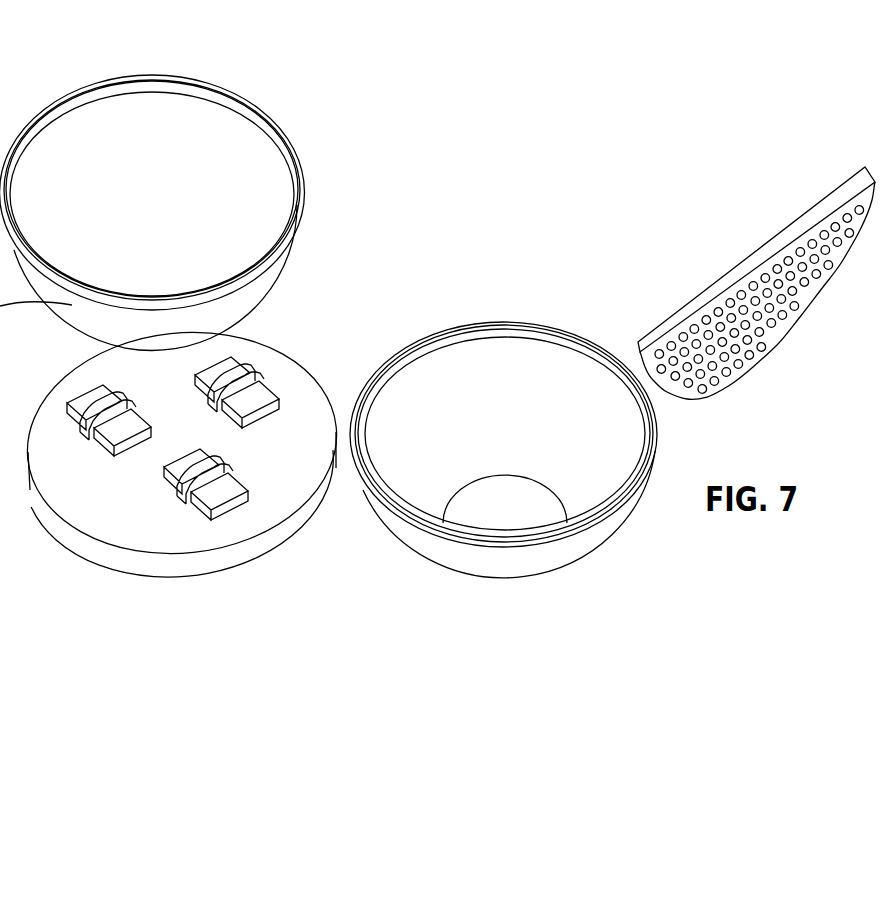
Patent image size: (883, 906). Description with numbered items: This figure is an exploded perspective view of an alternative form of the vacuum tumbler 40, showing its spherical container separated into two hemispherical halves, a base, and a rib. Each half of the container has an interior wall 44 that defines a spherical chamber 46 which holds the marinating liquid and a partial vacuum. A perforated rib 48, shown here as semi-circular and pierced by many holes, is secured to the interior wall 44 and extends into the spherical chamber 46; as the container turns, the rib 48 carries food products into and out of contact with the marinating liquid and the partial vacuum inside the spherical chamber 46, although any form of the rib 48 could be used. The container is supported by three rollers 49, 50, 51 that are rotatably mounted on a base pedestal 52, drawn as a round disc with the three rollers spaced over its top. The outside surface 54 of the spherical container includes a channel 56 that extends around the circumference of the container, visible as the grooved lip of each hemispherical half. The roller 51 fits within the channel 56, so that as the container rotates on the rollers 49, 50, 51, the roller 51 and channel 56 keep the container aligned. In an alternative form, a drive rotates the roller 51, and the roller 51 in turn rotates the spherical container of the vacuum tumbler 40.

The vacuum tumbler 40 is at (405, 200).
The interior wall 44 is at (227, 145).
The spherical chamber 46 is at (138, 145).
The perforated rib 48 is at (743, 268).
The roller 49 is at (90, 400).
The roller 50 is at (185, 500).
The roller 51 is at (250, 372).
The base pedestal 52 is at (263, 507).
The outside surface 54 is at (487, 563).
The channel 56 is at (258, 268).